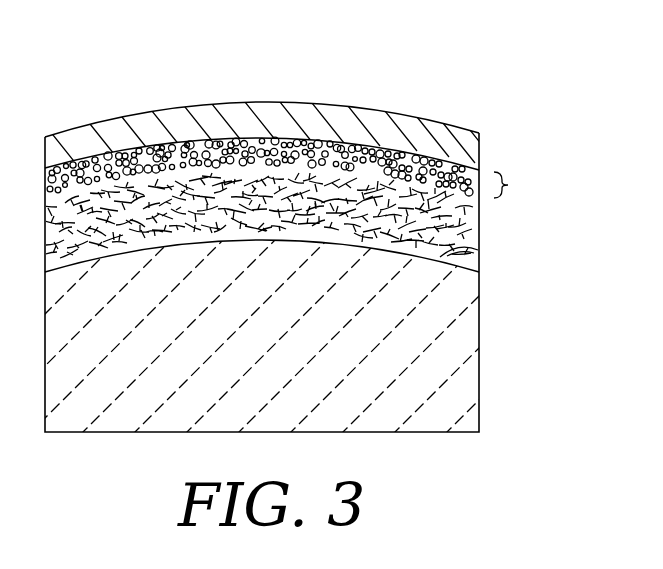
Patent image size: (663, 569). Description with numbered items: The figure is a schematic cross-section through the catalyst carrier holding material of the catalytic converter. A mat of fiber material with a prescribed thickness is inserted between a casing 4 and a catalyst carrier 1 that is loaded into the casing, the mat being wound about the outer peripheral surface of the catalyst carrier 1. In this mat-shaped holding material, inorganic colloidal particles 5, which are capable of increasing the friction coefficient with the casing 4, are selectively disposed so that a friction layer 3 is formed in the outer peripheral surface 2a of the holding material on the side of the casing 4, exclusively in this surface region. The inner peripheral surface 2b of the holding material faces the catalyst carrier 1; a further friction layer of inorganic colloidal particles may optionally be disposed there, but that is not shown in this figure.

The catalyst carrier 1 is at (462, 342).
The outer peripheral surface 2a is at (443, 162).
The inner peripheral surface 2b is at (476, 250).
The friction layer 3 is at (511, 187).
The casing 4 is at (387, 117).
The inorganic colloidal particles 5 is at (185, 145).